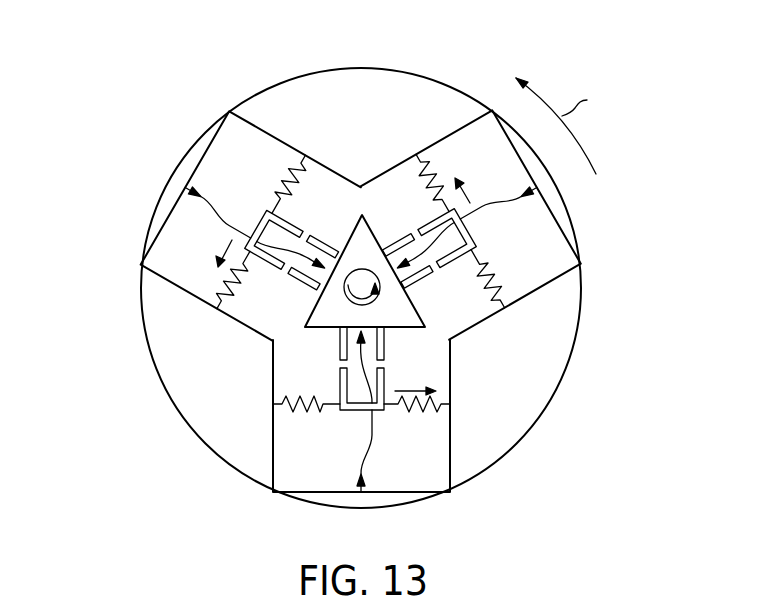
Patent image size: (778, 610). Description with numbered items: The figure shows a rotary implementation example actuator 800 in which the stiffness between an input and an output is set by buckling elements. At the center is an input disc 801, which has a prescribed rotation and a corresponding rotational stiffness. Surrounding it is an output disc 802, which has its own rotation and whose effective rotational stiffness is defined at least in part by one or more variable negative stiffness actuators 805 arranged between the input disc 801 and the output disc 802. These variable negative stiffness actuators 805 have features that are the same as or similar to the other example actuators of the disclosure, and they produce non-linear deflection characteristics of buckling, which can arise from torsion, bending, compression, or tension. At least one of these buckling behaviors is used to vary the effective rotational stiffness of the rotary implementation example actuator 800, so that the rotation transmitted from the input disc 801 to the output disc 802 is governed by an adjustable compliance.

The rotary implementation example actuator 800 is at (123, 109).
The input disc 801 is at (346, 297).
The output disc 802 is at (367, 90).
The variable negative stiffness actuator 805 is at (550, 252).